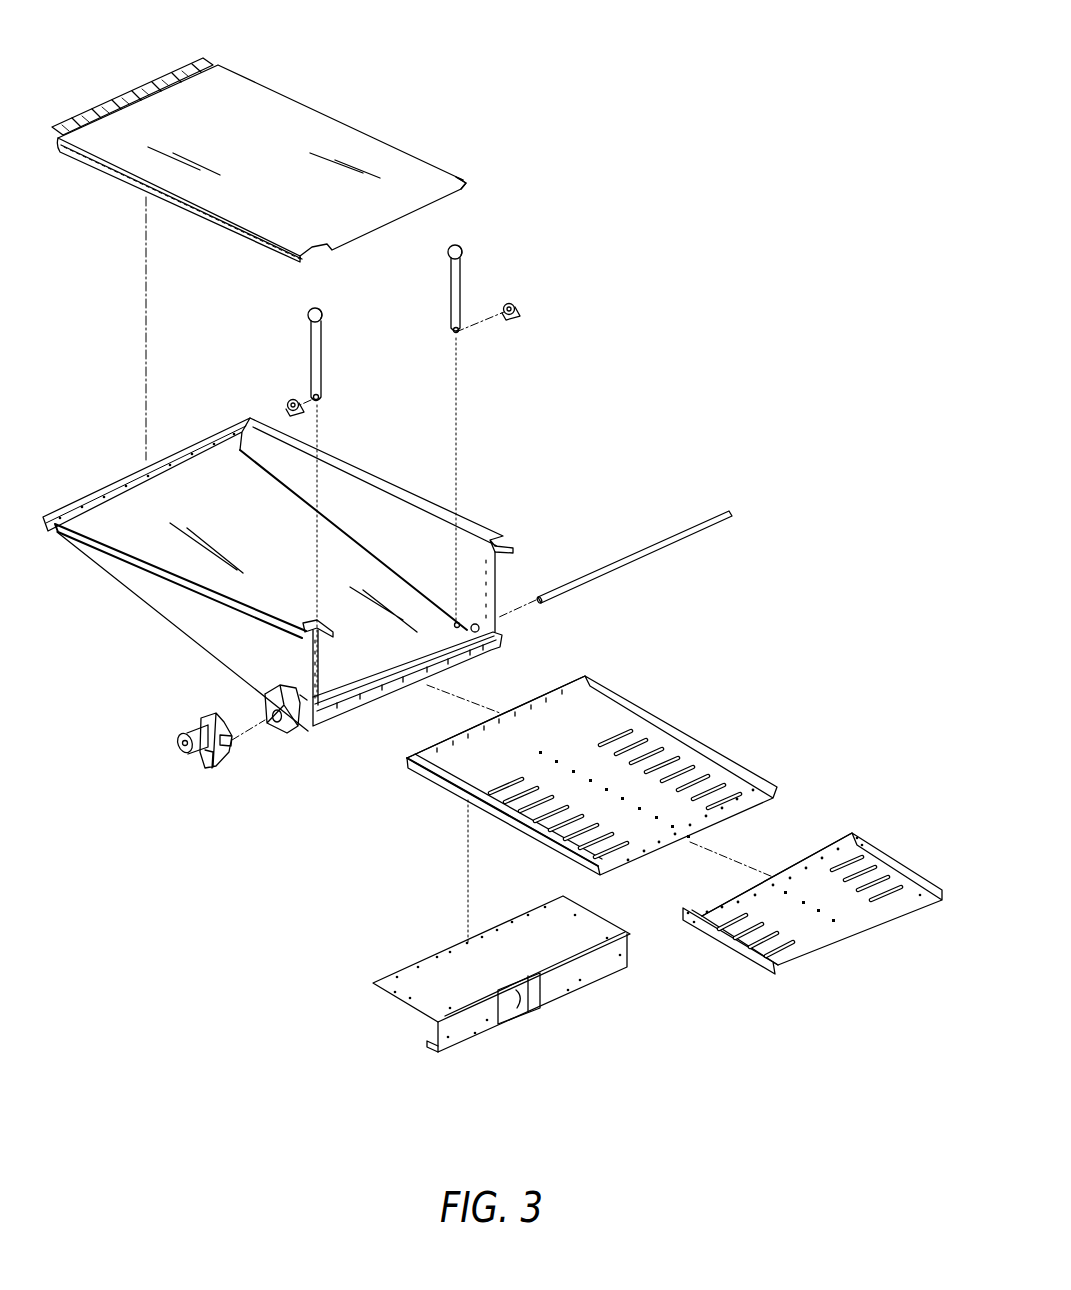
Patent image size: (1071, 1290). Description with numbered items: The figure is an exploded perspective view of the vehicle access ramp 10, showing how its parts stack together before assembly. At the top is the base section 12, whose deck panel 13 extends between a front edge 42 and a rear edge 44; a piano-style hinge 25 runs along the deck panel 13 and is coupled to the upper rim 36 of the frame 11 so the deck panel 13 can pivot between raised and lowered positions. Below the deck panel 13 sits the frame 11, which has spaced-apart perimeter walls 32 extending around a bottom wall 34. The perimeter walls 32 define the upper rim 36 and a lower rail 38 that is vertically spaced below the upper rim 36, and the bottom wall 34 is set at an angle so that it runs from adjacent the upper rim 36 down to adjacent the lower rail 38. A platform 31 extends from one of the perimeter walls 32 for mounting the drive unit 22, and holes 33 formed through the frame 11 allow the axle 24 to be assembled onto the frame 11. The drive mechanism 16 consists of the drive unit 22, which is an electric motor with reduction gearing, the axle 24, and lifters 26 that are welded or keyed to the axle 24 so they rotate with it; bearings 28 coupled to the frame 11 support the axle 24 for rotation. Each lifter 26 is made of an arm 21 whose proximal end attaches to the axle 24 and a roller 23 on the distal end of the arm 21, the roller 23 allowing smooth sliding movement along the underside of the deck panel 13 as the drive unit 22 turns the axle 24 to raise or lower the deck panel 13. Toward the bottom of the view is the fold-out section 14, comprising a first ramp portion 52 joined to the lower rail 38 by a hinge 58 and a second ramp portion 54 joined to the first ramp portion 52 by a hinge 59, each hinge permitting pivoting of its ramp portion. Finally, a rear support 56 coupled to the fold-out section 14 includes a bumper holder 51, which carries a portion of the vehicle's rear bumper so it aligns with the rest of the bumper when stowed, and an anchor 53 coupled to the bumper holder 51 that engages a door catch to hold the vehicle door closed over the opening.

The vehicle access ramp 10 is at (687, 148).
The frame 11 is at (480, 510).
The base section 12 is at (377, 120).
The deck panel 13 is at (260, 142).
The fold-out section 14 is at (795, 745).
The drive mechanism 16 is at (203, 795).
The arm 21 is at (307, 363).
The drive unit 22 is at (236, 764).
The roller 23 is at (297, 310).
The axle 24 is at (670, 525).
The hinge 25 is at (140, 88).
The lifter 26 is at (442, 310).
The bearing 28 is at (283, 413).
The platform 31 is at (283, 742).
The perimeter wall 32 is at (220, 630).
The hole 33 is at (482, 619).
The bottom wall 34 is at (150, 530).
The upper rim 36 is at (120, 478).
The lower rail 38 is at (388, 703).
The front edge 42 is at (57, 153).
The rear edge 44 is at (470, 182).
The bumper holder 51 is at (393, 995).
The first ramp portion 52 is at (650, 697).
The anchor 53 is at (522, 1017).
The second ramp portion 54 is at (877, 840).
The rear support 56 is at (563, 1018).
The hinge 58 is at (508, 708).
The hinge 59 is at (797, 860).